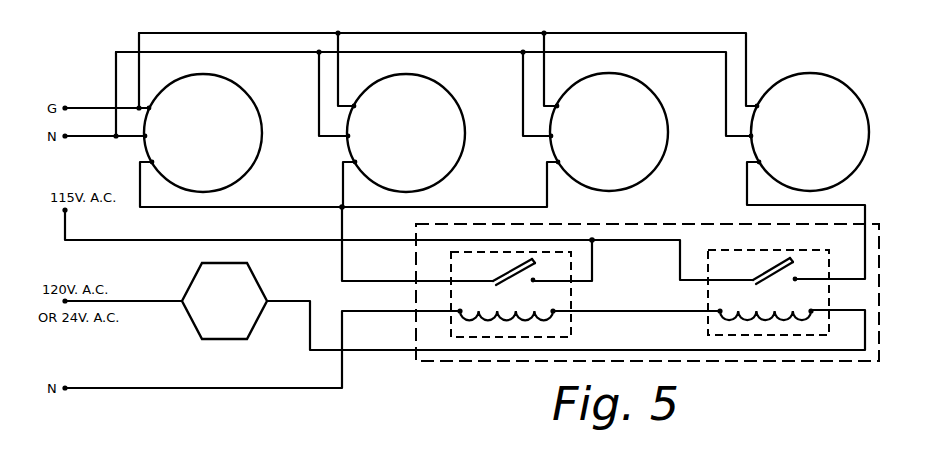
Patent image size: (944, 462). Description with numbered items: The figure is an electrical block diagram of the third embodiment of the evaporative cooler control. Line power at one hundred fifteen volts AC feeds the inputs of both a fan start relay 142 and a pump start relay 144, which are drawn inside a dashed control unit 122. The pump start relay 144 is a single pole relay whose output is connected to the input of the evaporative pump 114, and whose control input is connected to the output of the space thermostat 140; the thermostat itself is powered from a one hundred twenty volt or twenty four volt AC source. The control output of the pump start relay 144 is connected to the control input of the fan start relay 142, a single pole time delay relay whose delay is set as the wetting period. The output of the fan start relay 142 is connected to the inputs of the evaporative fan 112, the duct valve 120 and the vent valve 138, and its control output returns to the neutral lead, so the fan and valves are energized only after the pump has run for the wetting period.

The evaporative cooler fan 112 is at (248, 107).
The duct valve 120 is at (453, 107).
The vent valve 138 is at (656, 102).
The evaporative pump 114 is at (835, 82).
The space thermostat 140 is at (254, 288).
The control unit 122 is at (477, 358).
The fan start relay 142 is at (566, 300).
The pump start relay 144 is at (828, 298).